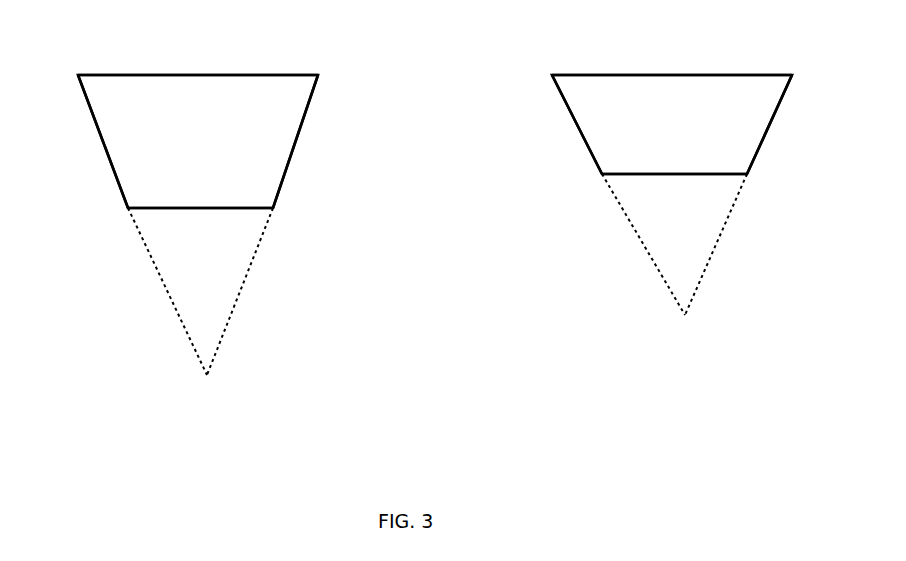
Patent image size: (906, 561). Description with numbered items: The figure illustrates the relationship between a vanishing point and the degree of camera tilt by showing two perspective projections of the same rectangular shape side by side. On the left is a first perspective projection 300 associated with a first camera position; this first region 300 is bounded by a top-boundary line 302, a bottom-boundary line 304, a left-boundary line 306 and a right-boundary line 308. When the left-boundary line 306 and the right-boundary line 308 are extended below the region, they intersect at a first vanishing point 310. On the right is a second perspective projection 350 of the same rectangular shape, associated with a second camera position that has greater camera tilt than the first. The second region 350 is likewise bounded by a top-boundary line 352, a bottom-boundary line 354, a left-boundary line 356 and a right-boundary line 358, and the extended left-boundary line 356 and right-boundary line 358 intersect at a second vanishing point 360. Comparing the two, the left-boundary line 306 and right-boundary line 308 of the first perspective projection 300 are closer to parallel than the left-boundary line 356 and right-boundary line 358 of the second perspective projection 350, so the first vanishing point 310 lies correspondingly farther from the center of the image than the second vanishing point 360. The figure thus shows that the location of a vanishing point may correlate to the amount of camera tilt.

The first perspective projection 300 is at (295, 119).
The top-boundary line 302 is at (192, 70).
The bottom-boundary line 304 is at (188, 212).
The left-boundary line 306 is at (106, 165).
The right-boundary line 308 is at (292, 162).
The first vanishing point 310 is at (208, 380).
The second perspective projection 350 is at (757, 136).
The top-boundary line 352 is at (690, 70).
The bottom-boundary line 354 is at (658, 178).
The left-boundary line 356 is at (580, 140).
The right-boundary line 358 is at (760, 152).
The second vanishing point 360 is at (686, 320).